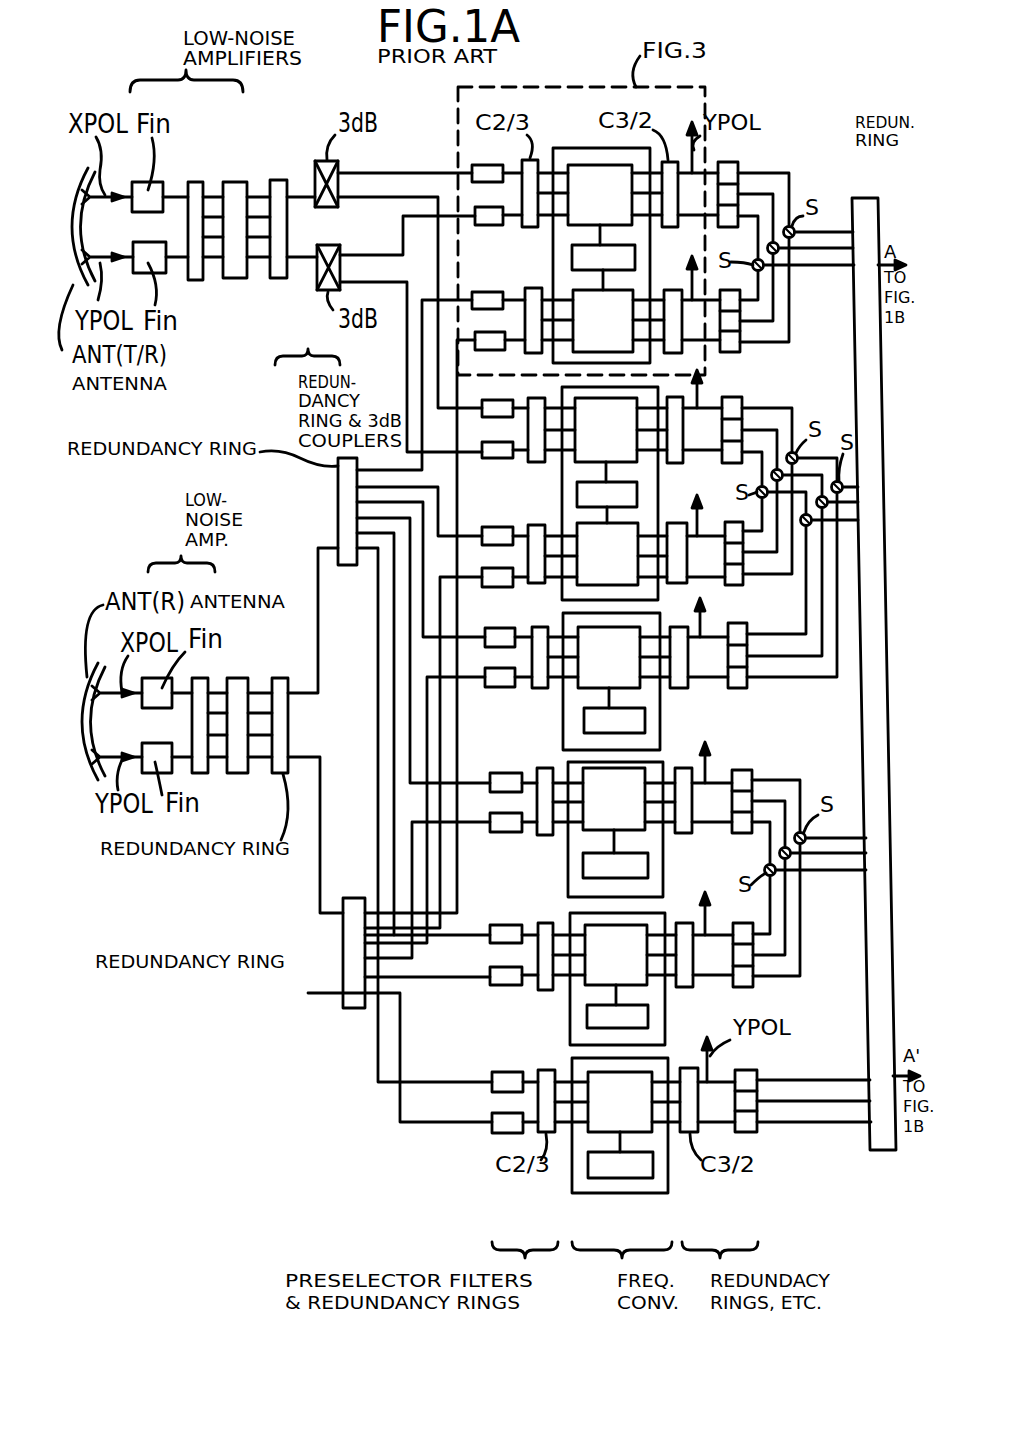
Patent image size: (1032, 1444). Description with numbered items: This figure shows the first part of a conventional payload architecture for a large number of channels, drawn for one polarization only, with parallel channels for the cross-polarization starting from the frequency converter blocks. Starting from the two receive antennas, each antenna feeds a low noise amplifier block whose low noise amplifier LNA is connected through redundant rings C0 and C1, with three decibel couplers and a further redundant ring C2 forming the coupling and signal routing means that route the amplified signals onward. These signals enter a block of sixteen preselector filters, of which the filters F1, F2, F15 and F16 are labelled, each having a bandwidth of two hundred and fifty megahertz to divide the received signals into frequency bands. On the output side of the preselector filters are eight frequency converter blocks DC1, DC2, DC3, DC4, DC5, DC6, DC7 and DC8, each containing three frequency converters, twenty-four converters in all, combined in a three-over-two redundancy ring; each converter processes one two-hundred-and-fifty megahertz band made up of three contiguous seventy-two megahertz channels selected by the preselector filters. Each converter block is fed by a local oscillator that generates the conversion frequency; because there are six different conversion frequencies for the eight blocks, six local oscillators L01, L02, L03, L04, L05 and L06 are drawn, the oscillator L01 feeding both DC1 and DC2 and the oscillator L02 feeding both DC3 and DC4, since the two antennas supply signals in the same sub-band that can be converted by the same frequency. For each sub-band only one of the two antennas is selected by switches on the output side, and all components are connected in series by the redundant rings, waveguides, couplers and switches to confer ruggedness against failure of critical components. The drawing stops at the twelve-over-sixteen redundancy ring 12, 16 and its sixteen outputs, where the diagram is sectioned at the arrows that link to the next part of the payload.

The 12/16 redundancy ring 12 is at (879, 649).
The 12/16 redundancy ring 16 is at (862, 200).
The preselector filter F1 is at (480, 168).
The preselector filter F2 is at (485, 224).
The preselector filter F15 is at (502, 1070).
The preselector filter F16 is at (498, 1130).
The redundant ring C0 is at (203, 272).
The redundant ring C1 is at (280, 178).
The redundant ring C2 is at (338, 504).
The low noise amplifier LNA is at (234, 180).
The frequency converter block DC1 is at (600, 195).
The frequency converter block DC2 is at (603, 321).
The frequency converter block DC3 is at (606, 430).
The frequency converter block DC4 is at (607, 554).
The frequency converter block DC5 is at (609, 657).
The frequency converter block DC6 is at (614, 799).
The frequency converter block DC7 is at (616, 955).
The frequency converter block DC8 is at (620, 1102).
The local oscillator L01 is at (628, 262).
The local oscillator L02 is at (633, 497).
The local oscillator L03 is at (640, 725).
The local oscillator L04 is at (643, 868).
The local oscillator L05 is at (645, 1018).
The local oscillator L06 is at (620, 1174).